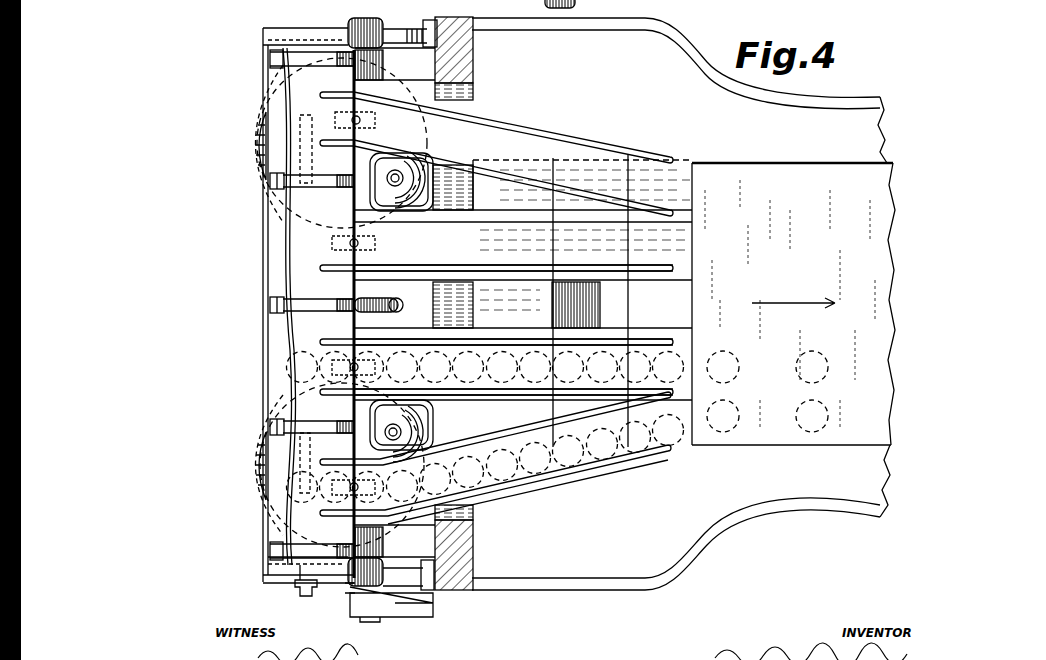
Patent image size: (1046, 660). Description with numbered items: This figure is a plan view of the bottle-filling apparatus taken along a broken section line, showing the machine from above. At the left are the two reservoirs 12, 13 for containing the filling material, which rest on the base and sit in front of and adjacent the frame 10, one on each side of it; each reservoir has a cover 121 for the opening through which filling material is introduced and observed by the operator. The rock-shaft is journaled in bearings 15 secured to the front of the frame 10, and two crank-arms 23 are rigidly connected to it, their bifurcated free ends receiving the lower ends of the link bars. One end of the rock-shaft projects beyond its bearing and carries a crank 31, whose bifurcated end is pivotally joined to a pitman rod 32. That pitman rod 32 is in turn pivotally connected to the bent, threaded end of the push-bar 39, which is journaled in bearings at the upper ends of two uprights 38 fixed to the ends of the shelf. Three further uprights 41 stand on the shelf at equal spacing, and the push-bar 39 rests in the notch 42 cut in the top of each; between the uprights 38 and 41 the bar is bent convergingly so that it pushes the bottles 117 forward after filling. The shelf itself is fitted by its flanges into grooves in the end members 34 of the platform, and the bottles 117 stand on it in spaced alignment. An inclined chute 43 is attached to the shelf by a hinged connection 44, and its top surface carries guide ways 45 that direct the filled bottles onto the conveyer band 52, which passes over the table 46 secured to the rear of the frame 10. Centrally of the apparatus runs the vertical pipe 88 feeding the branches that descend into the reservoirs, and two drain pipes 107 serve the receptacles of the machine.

The frame 10 is at (462, 55).
The reservoir 12 is at (257, 153).
The reservoir 13 is at (258, 450).
The bearings 15 is at (370, 32).
The crank-arms 23 is at (384, 62).
The crank 31 is at (410, 608).
The pitman rod 32 is at (345, 585).
The end members 34 is at (318, 38).
The uprights 38 is at (328, 55).
The push-bar 39 is at (285, 268).
The uprights 41 is at (333, 183).
The notch or groove 42 is at (280, 184).
The inclined chute 43 is at (540, 160).
The hinged connection 44 is at (376, 120).
The guide ways 45 is at (500, 128).
The table 46 is at (790, 490).
The conveyer band 52 is at (892, 322).
The vertical pipe 88 is at (403, 305).
The drain pipes 107 is at (403, 180).
The bottles 117 is at (635, 352).
The cover 121 is at (293, 140).